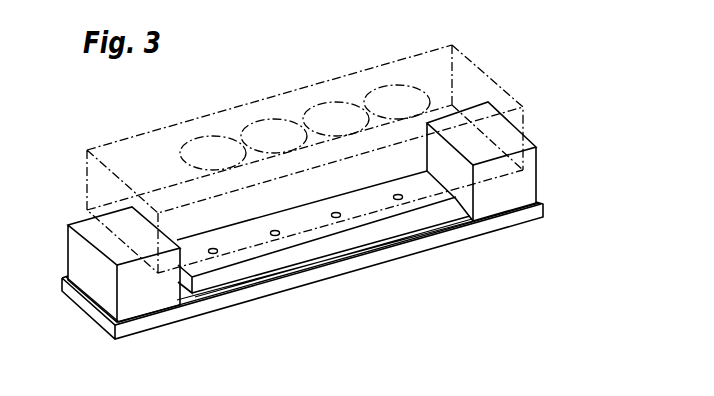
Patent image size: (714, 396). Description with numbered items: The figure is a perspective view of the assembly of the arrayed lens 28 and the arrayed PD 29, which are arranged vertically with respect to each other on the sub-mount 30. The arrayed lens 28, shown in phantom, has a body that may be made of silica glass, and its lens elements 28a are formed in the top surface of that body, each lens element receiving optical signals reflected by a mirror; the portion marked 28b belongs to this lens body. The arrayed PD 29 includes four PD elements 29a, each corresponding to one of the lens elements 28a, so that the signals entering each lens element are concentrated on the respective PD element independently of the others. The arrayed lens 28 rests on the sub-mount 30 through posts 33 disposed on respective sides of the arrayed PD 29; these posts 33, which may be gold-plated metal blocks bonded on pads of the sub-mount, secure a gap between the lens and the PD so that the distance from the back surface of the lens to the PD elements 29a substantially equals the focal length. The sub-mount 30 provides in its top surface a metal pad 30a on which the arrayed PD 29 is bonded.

The arrayed lens 28 is at (482, 63).
The lens elements 28a is at (397, 96).
The side wall of cover 28b is at (519, 107).
The arrayed PD 29 is at (328, 252).
The PD elements 29a is at (218, 253).
The sub-mount 30 is at (415, 248).
The metal pad 30a is at (469, 226).
The posts 33 is at (526, 185).